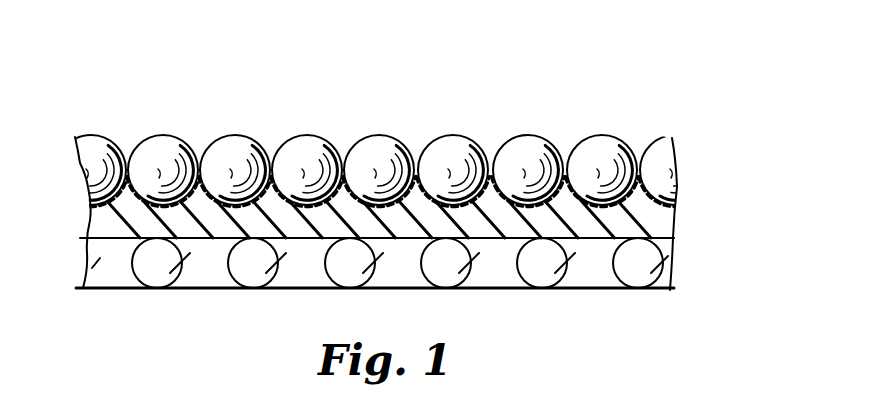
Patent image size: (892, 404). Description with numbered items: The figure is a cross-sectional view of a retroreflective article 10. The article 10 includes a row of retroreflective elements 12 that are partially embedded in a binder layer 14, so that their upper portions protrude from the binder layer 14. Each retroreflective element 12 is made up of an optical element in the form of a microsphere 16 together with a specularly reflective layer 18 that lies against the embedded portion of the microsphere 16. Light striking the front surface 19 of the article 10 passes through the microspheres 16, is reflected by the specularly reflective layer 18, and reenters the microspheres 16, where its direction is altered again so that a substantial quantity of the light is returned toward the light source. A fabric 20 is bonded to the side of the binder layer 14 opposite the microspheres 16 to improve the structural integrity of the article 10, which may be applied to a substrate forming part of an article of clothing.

The retroreflective article 10 is at (482, 51).
The retroreflective elements 12 is at (553, 124).
The binder layer 14 is at (100, 217).
The microspheres 16 is at (297, 152).
The specularly reflective layer 18 is at (678, 210).
The front surface 19 is at (379, 135).
The fabric 20 is at (639, 284).